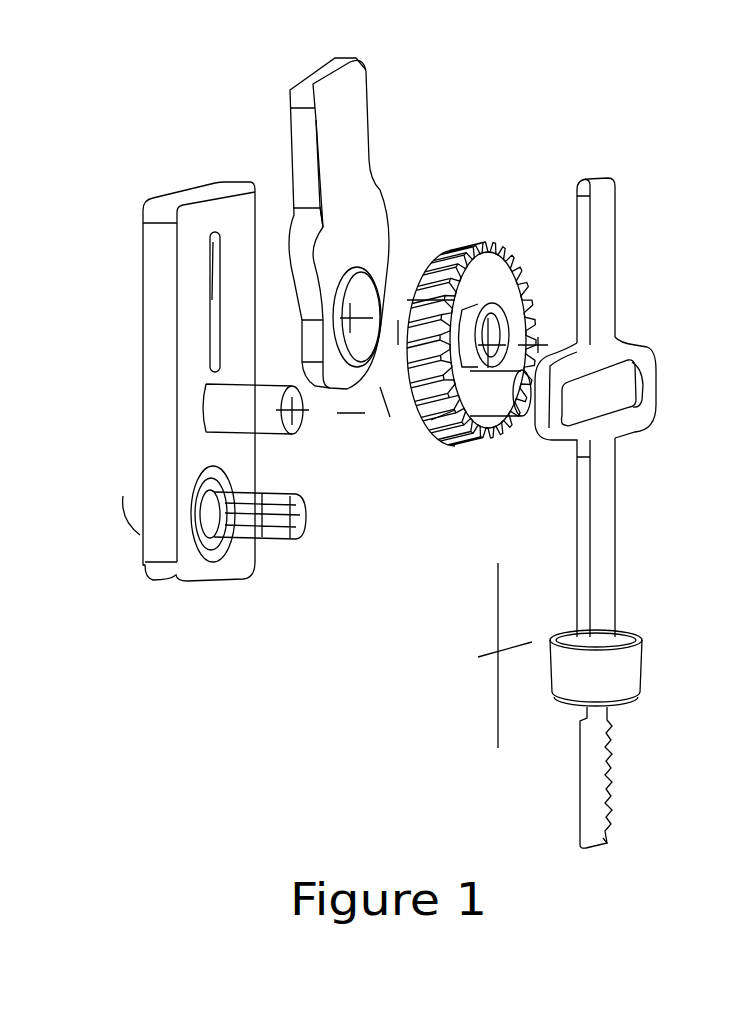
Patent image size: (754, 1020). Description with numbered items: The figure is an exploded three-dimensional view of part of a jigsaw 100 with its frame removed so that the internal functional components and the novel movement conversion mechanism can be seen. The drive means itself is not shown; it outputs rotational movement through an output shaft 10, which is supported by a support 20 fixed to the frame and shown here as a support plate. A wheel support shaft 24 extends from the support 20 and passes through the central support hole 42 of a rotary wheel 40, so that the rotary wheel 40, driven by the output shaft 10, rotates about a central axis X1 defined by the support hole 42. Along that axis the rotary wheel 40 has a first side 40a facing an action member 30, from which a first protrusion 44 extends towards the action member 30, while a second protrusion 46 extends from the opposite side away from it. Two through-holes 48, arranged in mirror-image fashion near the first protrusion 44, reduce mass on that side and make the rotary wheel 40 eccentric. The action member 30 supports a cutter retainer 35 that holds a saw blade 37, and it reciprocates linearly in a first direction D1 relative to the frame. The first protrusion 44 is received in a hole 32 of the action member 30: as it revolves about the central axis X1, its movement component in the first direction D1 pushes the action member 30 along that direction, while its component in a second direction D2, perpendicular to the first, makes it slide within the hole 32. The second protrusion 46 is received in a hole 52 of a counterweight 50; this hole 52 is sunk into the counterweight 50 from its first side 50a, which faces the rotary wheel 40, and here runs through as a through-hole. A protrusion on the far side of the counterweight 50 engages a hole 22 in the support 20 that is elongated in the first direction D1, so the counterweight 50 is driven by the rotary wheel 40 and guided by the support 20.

The jigsaw 100 is at (158, 157).
The output shaft 10 is at (287, 537).
The support 20 is at (152, 278).
The hole 22 is at (216, 232).
The wheel support shaft 24 is at (272, 413).
The action member 30 is at (600, 473).
The hole 32 is at (627, 383).
The cutter retainer 35 is at (628, 667).
The saw blade 37 is at (593, 792).
The rotary wheel 40 is at (503, 247).
The first side 40a is at (483, 245).
The central support hole 42 is at (500, 308).
The first protrusion 44 is at (523, 397).
The second protrusion 46 is at (418, 317).
The through-holes 48 is at (433, 420).
The counterweight 50 is at (343, 112).
The first side 50a is at (362, 147).
The hole 52 is at (350, 343).
The central axis X1 is at (540, 345).
The first direction D1 is at (501, 676).
The second direction D2 is at (480, 660).